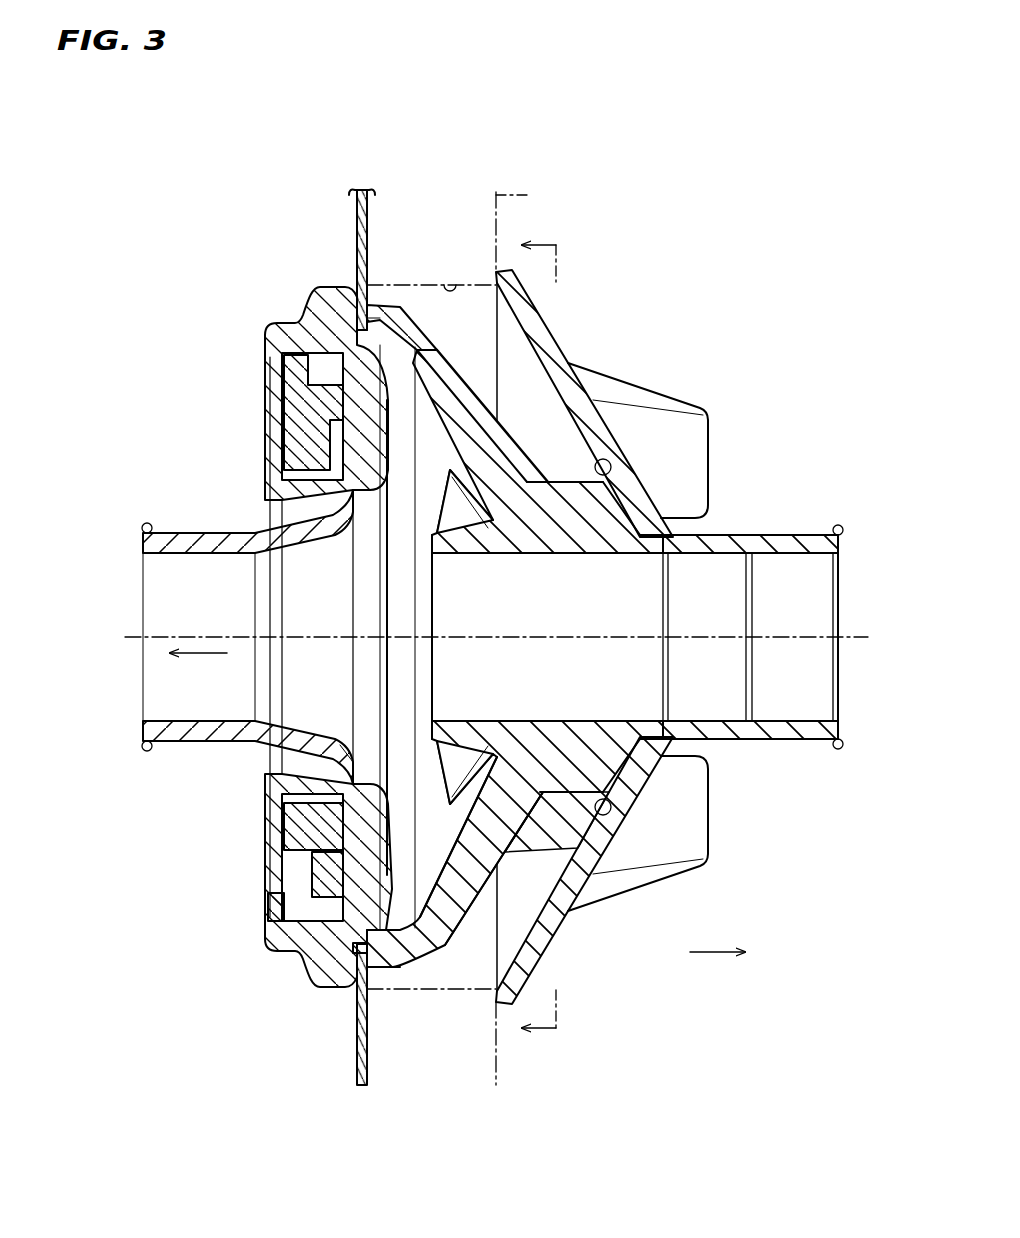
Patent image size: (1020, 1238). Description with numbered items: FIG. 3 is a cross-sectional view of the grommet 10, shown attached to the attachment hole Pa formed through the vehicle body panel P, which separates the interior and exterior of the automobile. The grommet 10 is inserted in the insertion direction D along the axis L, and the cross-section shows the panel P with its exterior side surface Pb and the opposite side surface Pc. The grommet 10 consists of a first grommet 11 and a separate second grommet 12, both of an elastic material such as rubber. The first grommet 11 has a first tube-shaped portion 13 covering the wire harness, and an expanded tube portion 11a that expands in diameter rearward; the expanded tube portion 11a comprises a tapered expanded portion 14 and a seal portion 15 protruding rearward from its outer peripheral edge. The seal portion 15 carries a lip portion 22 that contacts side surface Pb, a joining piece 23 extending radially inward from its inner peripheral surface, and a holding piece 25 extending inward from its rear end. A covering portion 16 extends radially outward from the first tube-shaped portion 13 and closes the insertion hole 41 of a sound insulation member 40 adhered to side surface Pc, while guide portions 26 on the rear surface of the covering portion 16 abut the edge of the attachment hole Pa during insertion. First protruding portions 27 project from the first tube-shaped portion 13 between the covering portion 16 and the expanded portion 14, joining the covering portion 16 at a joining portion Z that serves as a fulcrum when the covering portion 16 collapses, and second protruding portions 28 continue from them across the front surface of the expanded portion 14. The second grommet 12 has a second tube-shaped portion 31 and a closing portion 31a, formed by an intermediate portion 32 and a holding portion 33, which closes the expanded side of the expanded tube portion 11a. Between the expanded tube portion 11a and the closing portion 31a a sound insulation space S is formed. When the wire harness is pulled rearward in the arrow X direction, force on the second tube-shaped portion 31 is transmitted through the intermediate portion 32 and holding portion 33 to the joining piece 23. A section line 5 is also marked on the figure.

The grommet 10 is at (681, 300).
The first grommet 11 is at (605, 658).
The expanded tube portion 11a is at (438, 955).
The second grommet 12 is at (280, 422).
The first tube-shaped portion 13 is at (780, 545).
The expanded portion 14 is at (462, 887).
The seal portion 15 is at (390, 970).
The covering portion 16 is at (558, 350).
The lip portion 22 is at (345, 972).
The joining piece 23 is at (320, 867).
The holding piece 25 is at (272, 912).
The guide portion 26 is at (712, 446).
The first protruding portion 27 is at (570, 490).
The second protruding portion 28 is at (509, 462).
The second tube-shaped portion 31 is at (202, 545).
The closing portion 31a is at (268, 450).
The intermediate portion 32 is at (352, 766).
The holding portion 33 is at (282, 830).
The sound insulation member 40 is at (530, 197).
The insertion hole 41 is at (452, 278).
The section line V-V 5 is at (534, 640).
The vehicle body panel P is at (368, 226).
The attachment hole Pa is at (374, 322).
The side surface Pb is at (357, 1064).
The side surface Pc is at (367, 1064).
The sound insulation space S is at (400, 372).
The joining portion Z is at (611, 463).
The arrow X direction X is at (198, 671).
The insertion direction D is at (717, 936).
The axis L is at (848, 642).